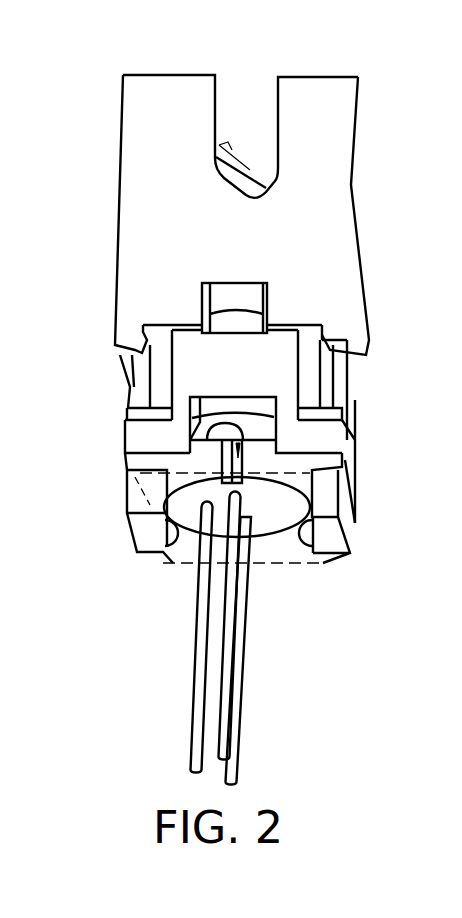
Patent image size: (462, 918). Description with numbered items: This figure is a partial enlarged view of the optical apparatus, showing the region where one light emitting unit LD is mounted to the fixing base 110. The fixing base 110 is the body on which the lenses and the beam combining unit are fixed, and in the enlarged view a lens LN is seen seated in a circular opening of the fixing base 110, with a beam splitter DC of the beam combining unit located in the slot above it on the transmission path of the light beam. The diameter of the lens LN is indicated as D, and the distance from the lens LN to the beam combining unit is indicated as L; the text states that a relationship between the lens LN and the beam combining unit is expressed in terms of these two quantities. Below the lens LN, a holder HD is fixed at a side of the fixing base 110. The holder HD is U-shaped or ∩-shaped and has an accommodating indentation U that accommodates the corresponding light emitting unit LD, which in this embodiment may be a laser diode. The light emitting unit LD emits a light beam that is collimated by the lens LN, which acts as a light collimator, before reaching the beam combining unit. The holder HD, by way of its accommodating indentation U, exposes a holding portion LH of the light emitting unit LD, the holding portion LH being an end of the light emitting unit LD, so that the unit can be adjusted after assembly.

The fixing base 110 is at (323, 222).
The beam splitter DC is at (240, 173).
The distance from the lenses to the beam combining unit L is at (229, 186).
The diameter of the lenses D is at (212, 299).
The lens LN is at (250, 320).
The holder HD is at (320, 437).
The accommodating indentation U is at (197, 417).
The light emitting unit LD is at (253, 457).
The holding portion LH is at (218, 440).